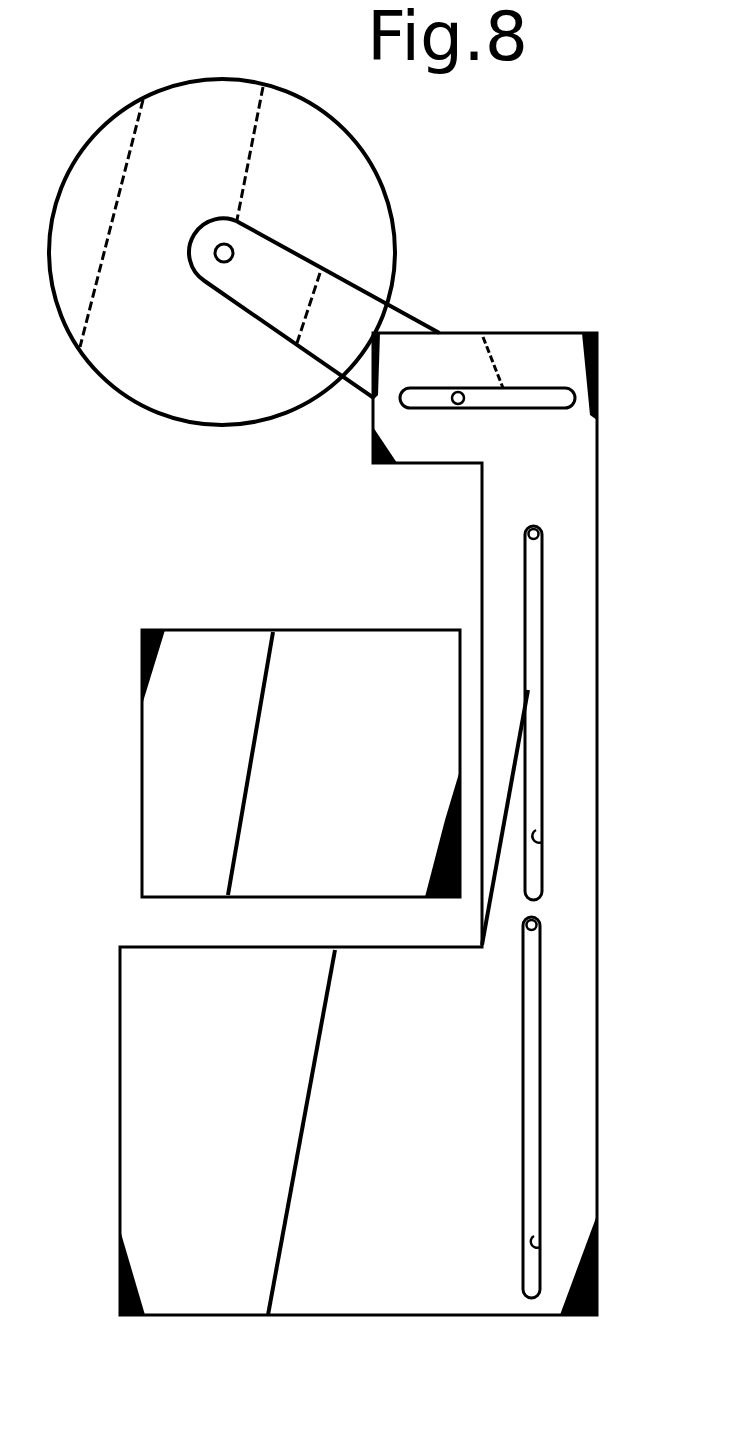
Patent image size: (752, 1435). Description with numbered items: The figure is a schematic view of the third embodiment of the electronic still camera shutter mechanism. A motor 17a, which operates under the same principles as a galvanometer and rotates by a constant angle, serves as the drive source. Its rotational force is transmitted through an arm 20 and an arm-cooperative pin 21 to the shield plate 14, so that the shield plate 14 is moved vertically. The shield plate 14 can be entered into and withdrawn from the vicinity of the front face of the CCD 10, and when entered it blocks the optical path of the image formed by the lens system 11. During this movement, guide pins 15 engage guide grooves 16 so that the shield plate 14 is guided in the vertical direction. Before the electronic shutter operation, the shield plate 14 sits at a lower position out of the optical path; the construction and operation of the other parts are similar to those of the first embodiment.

The motor 17a is at (350, 176).
The arm 20 is at (348, 313).
The arm-cooperative pin 21 is at (458, 394).
The guide pin 15 is at (537, 530).
The lens system 11 is at (542, 842).
The guide groove 16 is at (540, 1247).
The CCD 10 is at (350, 632).
The shield plate 14 is at (350, 982).